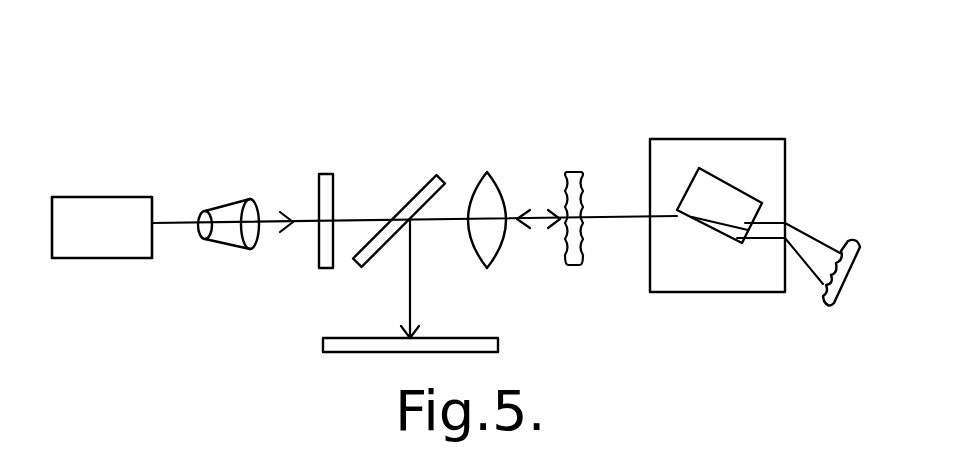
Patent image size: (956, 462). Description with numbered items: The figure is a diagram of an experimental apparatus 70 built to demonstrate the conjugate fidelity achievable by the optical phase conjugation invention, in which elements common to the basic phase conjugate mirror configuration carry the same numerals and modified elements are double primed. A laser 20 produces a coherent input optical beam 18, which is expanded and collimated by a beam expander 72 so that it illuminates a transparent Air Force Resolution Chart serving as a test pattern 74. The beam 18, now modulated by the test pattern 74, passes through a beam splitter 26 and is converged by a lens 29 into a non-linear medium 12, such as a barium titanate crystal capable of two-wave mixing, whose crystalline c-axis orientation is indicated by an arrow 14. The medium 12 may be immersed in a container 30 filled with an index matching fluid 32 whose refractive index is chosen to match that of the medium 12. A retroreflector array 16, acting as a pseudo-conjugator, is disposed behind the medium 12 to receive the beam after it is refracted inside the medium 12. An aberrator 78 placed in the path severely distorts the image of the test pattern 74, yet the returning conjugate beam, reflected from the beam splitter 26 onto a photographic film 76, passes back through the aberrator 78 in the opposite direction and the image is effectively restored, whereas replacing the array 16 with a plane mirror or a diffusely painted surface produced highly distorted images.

The non-linear medium 12 is at (752, 192).
The crystalline c-axis 14 is at (629, 148).
The retroreflector array 16 is at (824, 300).
The input optical beam 18 is at (181, 222).
The laser 20 is at (102, 197).
The beam splitter 26 is at (430, 180).
The converging lens 29 is at (487, 172).
The container 30 is at (695, 139).
The index matching fluid 32 is at (770, 154).
The apparatus 70 is at (292, 158).
The beam expander 72 is at (231, 250).
The test pattern 74 is at (333, 186).
The photographic film 76 is at (323, 345).
The aberrator 78 is at (575, 266).